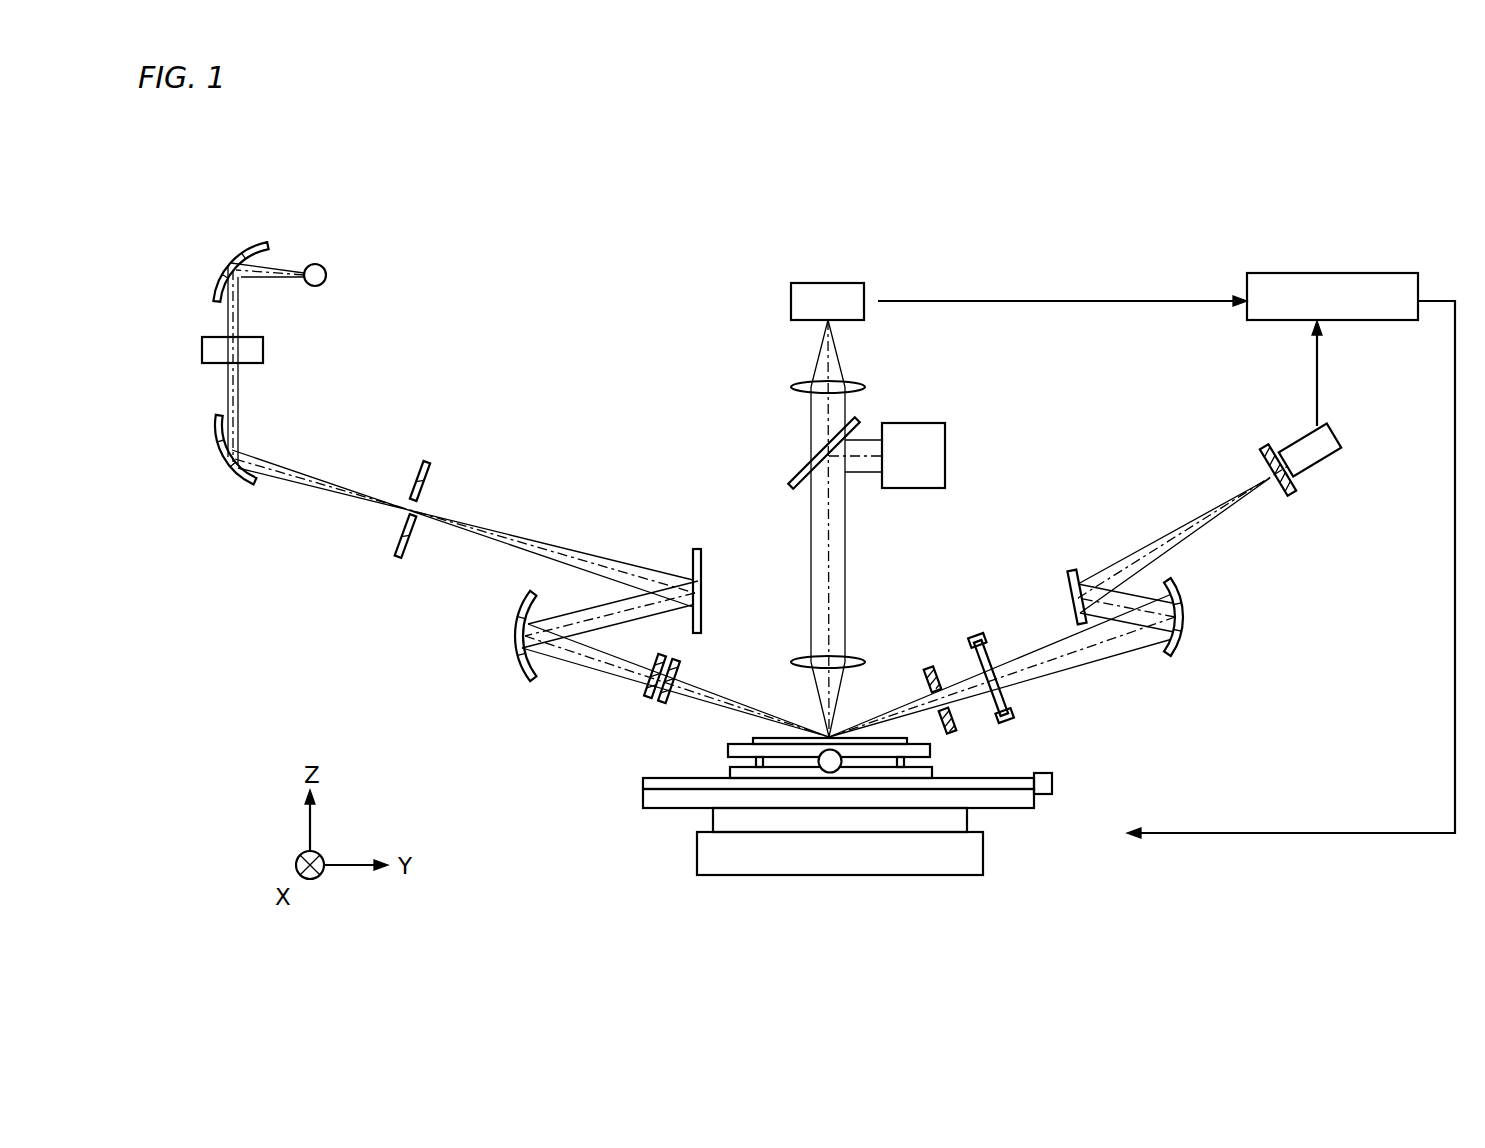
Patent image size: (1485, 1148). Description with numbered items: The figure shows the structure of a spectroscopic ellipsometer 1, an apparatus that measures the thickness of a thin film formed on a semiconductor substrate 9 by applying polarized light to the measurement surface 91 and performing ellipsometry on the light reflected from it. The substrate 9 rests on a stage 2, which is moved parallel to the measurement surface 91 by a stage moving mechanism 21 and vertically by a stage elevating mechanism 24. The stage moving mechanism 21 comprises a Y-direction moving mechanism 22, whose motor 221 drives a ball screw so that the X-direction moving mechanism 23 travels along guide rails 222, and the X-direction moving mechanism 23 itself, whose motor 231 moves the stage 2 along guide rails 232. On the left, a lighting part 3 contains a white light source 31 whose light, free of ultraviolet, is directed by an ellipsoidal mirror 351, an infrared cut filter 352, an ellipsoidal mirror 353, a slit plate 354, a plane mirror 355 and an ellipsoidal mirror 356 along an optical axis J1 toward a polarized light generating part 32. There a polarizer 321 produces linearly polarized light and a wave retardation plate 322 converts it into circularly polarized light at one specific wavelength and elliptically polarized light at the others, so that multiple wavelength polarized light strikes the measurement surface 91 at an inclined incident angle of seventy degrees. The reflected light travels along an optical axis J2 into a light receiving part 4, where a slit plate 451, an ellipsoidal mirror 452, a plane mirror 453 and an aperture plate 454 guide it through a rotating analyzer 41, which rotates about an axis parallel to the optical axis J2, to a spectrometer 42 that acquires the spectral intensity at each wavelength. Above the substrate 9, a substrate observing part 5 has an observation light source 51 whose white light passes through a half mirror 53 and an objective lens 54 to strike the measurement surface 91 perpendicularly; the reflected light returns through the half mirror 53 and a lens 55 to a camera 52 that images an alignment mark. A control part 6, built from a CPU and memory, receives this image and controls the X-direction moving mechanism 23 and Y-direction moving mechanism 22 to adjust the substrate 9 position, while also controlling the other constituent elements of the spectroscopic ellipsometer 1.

The spectroscopic ellipsometer 1 is at (216, 191).
The stage 2 is at (728, 746).
The lighting part 3 is at (519, 430).
The light receiving part 4 is at (1112, 426).
The substrate observing part 5 is at (940, 381).
The control part 6 is at (1327, 272).
The semiconductor substrate 9 is at (778, 737).
The measurement surface 91 is at (762, 736).
The optical axis J1 is at (703, 672).
The optical axis J2 is at (903, 707).
The stage moving mechanism 21 is at (1094, 839).
The Y-direction moving mechanism 22 is at (1076, 783).
The X-direction moving mechanism 23 is at (704, 766).
The stage elevating mechanism 24 is at (984, 855).
The white light source 31 is at (324, 268).
The polarized light generating part 32 is at (546, 714).
The rotating analyzer 41 is at (988, 642).
The spectrometer 42 is at (1303, 428).
The observation light source 51 is at (940, 423).
The camera 52 is at (823, 283).
The half mirror 53 is at (856, 425).
The objective lens 54 is at (796, 660).
The lens 55 is at (860, 386).
The motor 221 is at (1042, 795).
The guide rails 222 is at (973, 790).
The motor 231 is at (820, 770).
The guide rails 232 is at (757, 765).
The polarizer 321 is at (648, 673).
The wave retardation plate 322 is at (663, 692).
The ellipsoidal mirror 351 is at (243, 262).
The infrared cut filter 352 is at (250, 338).
The ellipsoidal mirror 353 is at (241, 476).
The slit plate 354 is at (398, 545).
The plane mirror 355 is at (699, 548).
The ellipsoidal mirror 356 is at (513, 635).
The slit plate 451 is at (951, 728).
The ellipsoidal mirror 452 is at (1181, 630).
The plane mirror 453 is at (1073, 570).
The aperture plate 454 is at (1263, 450).